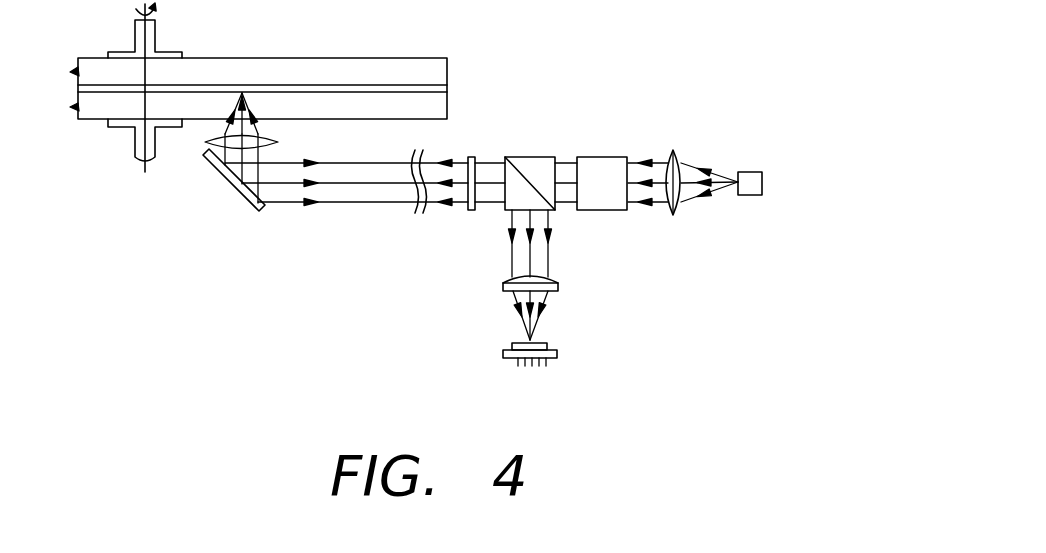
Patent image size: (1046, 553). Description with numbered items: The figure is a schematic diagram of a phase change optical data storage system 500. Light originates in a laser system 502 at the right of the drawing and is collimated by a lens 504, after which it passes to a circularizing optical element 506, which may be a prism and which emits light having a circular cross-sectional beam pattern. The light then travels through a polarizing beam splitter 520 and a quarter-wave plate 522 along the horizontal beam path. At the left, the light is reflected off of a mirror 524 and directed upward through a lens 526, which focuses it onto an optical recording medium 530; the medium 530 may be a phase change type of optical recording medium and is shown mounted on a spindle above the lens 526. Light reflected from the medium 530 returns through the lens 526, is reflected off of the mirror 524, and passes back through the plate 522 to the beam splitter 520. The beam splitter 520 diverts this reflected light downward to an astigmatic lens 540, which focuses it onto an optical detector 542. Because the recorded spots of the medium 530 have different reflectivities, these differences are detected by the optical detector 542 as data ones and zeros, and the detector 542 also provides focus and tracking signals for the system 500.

The phase change optical data storage system 500 is at (255, 300).
The laser system 502 is at (750, 195).
The lens 504 is at (683, 155).
The circularizing optical element 506 is at (602, 157).
The polarizing beam splitter 520 is at (522, 157).
The quarter-wave plate 522 is at (471, 212).
The mirror 524 is at (250, 210).
The lens 526 is at (217, 147).
The optical recording medium 530 is at (396, 58).
The astigmatic lens 540 is at (558, 284).
The optical detector 542 is at (557, 355).